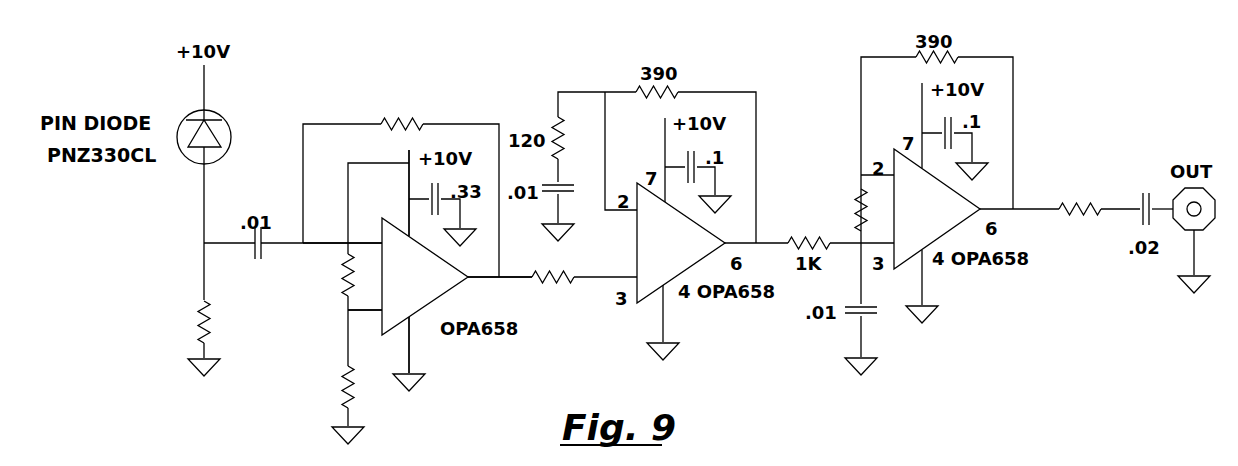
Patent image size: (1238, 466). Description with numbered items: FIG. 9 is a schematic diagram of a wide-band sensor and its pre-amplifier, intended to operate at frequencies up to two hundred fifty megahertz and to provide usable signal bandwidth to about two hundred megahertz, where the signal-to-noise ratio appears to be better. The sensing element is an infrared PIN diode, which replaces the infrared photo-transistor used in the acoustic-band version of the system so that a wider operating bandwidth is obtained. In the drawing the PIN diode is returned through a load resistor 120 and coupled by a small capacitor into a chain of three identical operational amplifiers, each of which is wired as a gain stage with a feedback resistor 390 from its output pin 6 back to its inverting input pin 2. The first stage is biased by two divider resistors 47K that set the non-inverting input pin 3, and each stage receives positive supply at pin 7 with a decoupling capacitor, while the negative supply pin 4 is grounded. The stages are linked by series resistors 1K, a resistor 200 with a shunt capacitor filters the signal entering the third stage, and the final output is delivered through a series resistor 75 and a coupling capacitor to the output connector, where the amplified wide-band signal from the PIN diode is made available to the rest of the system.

The 120 ohm resistor 120 is at (176, 322).
The 390 ohm feedback resistor 390 is at (401, 187).
The 47K resistor 47K is at (321, 334).
The 200 ohm resistor 200 is at (835, 210).
The 75 ohm output resistor 75 is at (1060, 198).
The 1K resistor 1K is at (552, 291).
The op amp inverting input pin 2 is at (342, 236).
The op amp non-inverting input pin 3 is at (365, 324).
The op amp negative supply pin 4 is at (421, 345).
The op amp output pin 6 is at (500, 292).
The op amp positive supply pin 7 is at (399, 193).